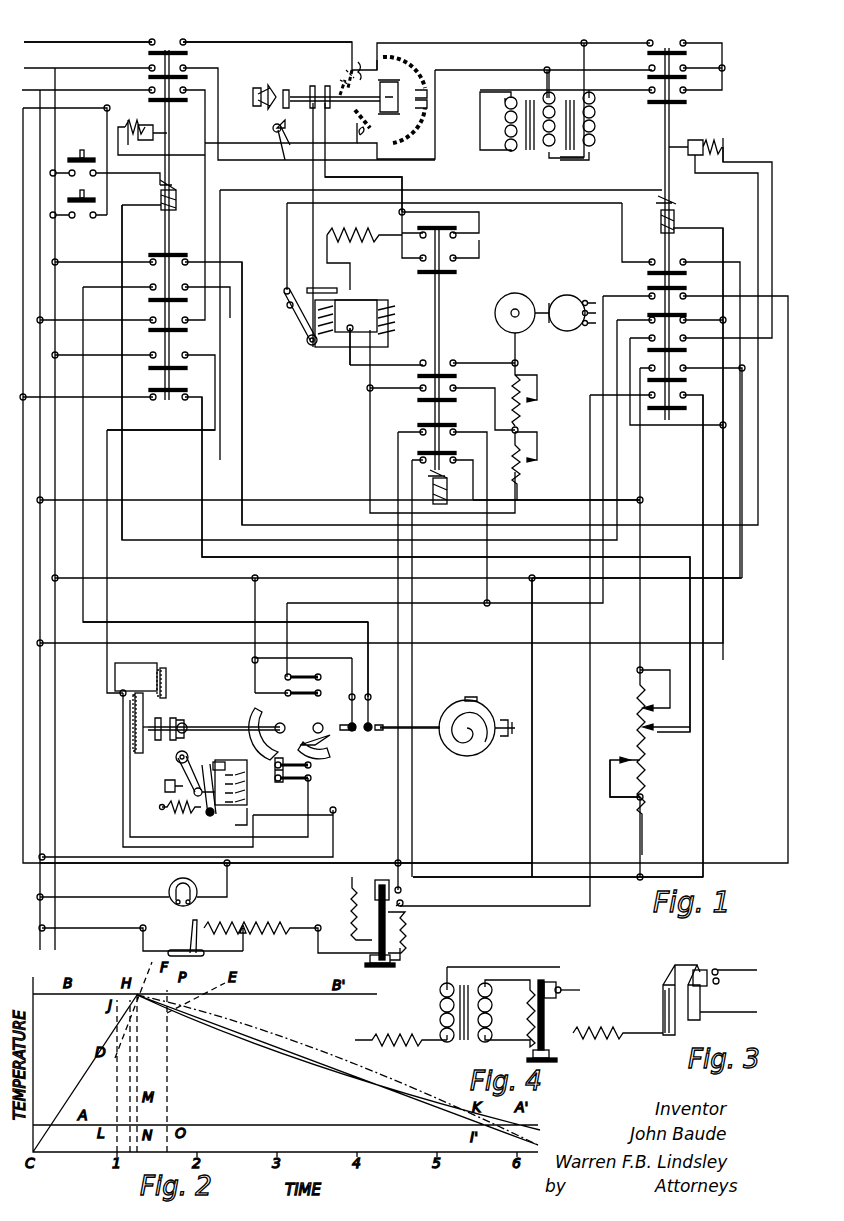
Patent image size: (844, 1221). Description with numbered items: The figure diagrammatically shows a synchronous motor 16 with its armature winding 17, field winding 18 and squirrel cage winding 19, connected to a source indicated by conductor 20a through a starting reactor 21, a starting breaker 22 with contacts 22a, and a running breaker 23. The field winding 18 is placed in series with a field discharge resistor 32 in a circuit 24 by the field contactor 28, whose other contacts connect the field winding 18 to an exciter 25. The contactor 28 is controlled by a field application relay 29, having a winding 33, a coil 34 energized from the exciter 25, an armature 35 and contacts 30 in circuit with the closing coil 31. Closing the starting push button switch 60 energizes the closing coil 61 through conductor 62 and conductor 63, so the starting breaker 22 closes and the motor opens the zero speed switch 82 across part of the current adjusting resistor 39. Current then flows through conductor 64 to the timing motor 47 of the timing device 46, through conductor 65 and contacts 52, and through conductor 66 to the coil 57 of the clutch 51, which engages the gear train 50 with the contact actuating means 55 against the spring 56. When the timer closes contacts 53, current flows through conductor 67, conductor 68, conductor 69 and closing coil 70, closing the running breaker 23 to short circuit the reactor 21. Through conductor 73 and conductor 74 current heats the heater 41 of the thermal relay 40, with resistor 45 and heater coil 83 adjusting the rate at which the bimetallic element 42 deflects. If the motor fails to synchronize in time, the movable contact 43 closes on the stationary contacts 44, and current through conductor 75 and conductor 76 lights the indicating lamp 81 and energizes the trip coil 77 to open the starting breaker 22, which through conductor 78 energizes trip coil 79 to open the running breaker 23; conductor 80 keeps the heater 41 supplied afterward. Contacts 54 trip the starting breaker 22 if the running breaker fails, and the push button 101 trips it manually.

In FIG. 1, the conductor 20a is at (88, 29).
In FIG. 1, the contacts of starting breaker 22a is at (243, 29).
In FIG. 1, the starting breaker 22 is at (195, 137).
In FIG. 1, the running breaker 23 is at (648, 138).
In FIG. 1, the field contactor 28 is at (465, 338).
In FIG. 1, the synchronous motor 16 is at (342, 74).
In FIG. 1, the armature winding 17 is at (362, 62).
In FIG. 1, the field winding 18 is at (391, 111).
In FIG. 1, the squirrel cage winding 19 is at (412, 72).
In FIG. 1, the zero speed switch 82 is at (280, 78).
In FIG. 1, the starting reactor 21 is at (560, 181).
In FIG. 1, the trip coil of running breaker 79 is at (703, 140).
In FIG. 1, the closing coil of running breaker 70 is at (676, 208).
In FIG. 1, the trip coil of starting breaker 77 is at (128, 126).
In FIG. 1, the starting push button switch 60 is at (105, 160).
In FIG. 1, the push button 101 is at (78, 200).
In FIG. 1, the closing coil of starting breaker 61 is at (160, 195).
In FIG. 1, the conductor 62 is at (120, 245).
In FIG. 1, the circuit 24 is at (404, 190).
In FIG. 1, the field discharge resistor 32 is at (364, 259).
In FIG. 1, the conductor 69 is at (220, 232).
In FIG. 1, the armature 35 is at (292, 290).
In FIG. 1, the winding 33 is at (340, 293).
In FIG. 1, the coil 34 is at (388, 320).
In FIG. 1, the contacts 30 is at (285, 315).
In FIG. 1, the field application relay 29 is at (340, 368).
In FIG. 1, the exciter 25 is at (522, 300).
In FIG. 1, the closing coil of field contactor 31 is at (449, 487).
In FIG. 1, the conductor 73 is at (552, 505).
In FIG. 1, the conductor 63 is at (705, 488).
In FIG. 1, the conductor 78 is at (240, 423).
In FIG. 1, the conductor 64 is at (146, 432).
In FIG. 1, the conductor 80 is at (202, 478).
In FIG. 1, the conductor 67 is at (168, 578).
In FIG. 1, the conductor 68 is at (83, 612).
In FIG. 1, the timing motor 47 is at (136, 677).
In FIG. 1, the timing device 46 is at (212, 682).
In FIG. 1, the gear train 50 is at (162, 718).
In FIG. 1, the contact actuating means 55 is at (252, 715).
In FIG. 1, the contacts 54 is at (323, 685).
In FIG. 1, the contacts 53 is at (360, 740).
In FIG. 1, the timing device reversing spring 56 is at (447, 738).
In FIG. 1, the electromagnetic relay 51 is at (248, 760).
In FIG. 1, the conductor 65 is at (130, 800).
In FIG. 1, the conductor 66 is at (120, 800).
In FIG. 1, the contacts 52 is at (293, 781).
In FIG. 1, the coil of clutch 57 is at (248, 808).
In FIG. 1, the thermal relay 40 is at (625, 731).
In FIG. 1, the resistor 45 is at (645, 770).
In FIG. 1, the conductor 75 is at (535, 810).
In FIG. 4, the conductor 75 is at (556, 1000).
In FIG. 1, the indicating lamp 81 is at (170, 886).
In FIG. 1, the conductor 76 is at (312, 872).
In FIG. 1, the movable contact 43 is at (382, 885).
In FIG. 3, the movable contact 43 is at (700, 968).
In FIG. 1, the stationary contacts 44 is at (404, 890).
In FIG. 3, the stationary contacts 44 is at (718, 982).
In FIG. 1, the heater 41 is at (360, 892).
In FIG. 4, the heater 41 is at (525, 1015).
In FIG. 1, the bimetallic element 42 is at (375, 937).
In FIG. 4, the bimetallic element 42 is at (548, 1005).
In FIG. 1, the heater coil 83 is at (402, 922).
In FIG. 1, the current adjusting resistor 39 is at (265, 935).
In FIG. 4, the current adjusting resistor 39 is at (388, 1044).
In FIG. 3, the current adjusting resistor 39 is at (610, 1040).
In FIG. 1, the conductor 74 is at (618, 875).
In FIG. 4, the conductor 74 is at (522, 965).